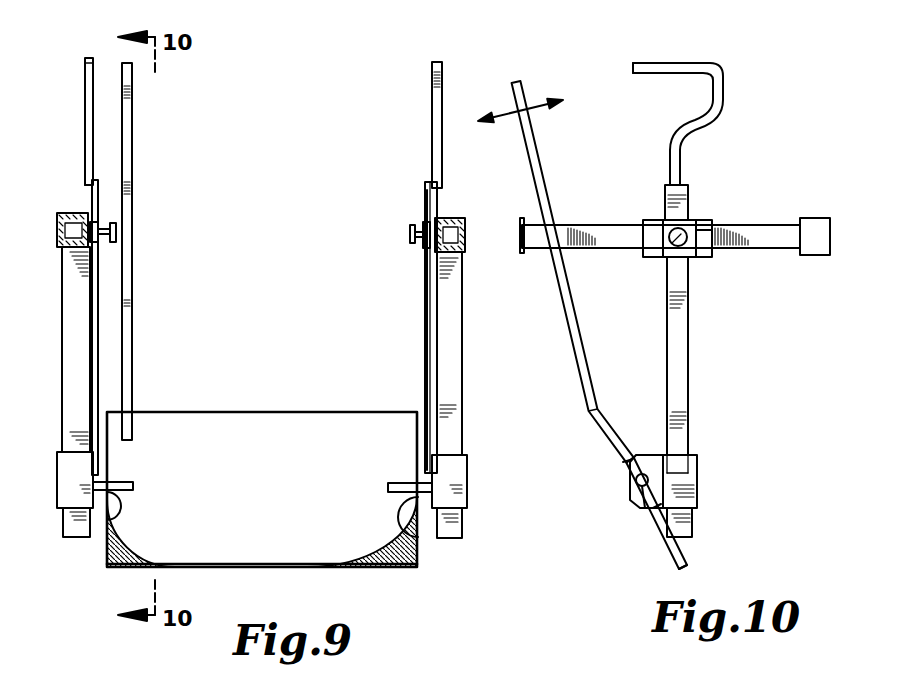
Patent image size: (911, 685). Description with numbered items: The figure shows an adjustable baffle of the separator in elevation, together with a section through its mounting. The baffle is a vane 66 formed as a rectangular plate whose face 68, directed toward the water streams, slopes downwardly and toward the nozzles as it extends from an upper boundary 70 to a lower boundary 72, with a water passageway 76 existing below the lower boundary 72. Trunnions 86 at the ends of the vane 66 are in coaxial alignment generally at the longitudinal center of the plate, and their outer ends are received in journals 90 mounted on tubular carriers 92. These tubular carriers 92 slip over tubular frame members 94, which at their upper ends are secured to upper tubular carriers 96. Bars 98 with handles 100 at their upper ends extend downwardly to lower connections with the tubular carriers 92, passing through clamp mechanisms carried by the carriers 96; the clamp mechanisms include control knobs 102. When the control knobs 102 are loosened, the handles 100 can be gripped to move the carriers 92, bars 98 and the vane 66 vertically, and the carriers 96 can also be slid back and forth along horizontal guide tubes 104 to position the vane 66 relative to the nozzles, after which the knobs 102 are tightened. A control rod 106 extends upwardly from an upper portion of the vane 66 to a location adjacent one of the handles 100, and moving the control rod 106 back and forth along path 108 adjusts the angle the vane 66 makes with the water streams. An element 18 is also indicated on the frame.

In FIG. 9, the slot 18 is at (427, 320).
In FIG. 9, the vane 66 is at (327, 565).
In FIG. 10, the vane 66 is at (623, 462).
In FIG. 10, the surface 68 is at (685, 548).
In FIG. 9, the upper boundary 70 is at (243, 412).
In FIG. 9, the lower boundary 72 is at (240, 568).
In FIG. 10, the lower boundary 72 is at (687, 565).
In FIG. 10, the water passageway 76 is at (598, 408).
In FIG. 9, the trunnions 86 is at (110, 528).
In FIG. 10, the trunnions 86 is at (647, 508).
In FIG. 10, the journals 90 is at (630, 502).
In FIG. 9, the tubular carriers 92 is at (57, 490).
In FIG. 10, the tubular carriers 92 is at (693, 497).
In FIG. 9, the tubular frame members 94 is at (72, 380).
In FIG. 9, the tubular carriers 96 is at (100, 243).
In FIG. 10, the tubular carriers 96 is at (703, 250).
In FIG. 9, the bars 98 is at (97, 350).
In FIG. 10, the bars 98 is at (682, 365).
In FIG. 9, the handles 100 is at (85, 139).
In FIG. 10, the handles 100 is at (677, 72).
In FIG. 9, the control knobs 102 is at (117, 230).
In FIG. 10, the control knobs 102 is at (662, 257).
In FIG. 9, the horizontal guide tubes 104 is at (57, 218).
In FIG. 10, the horizontal guide tubes 104 is at (750, 225).
In FIG. 9, the control rod 106 is at (132, 140).
In FIG. 10, the control rod 106 is at (535, 165).
In FIG. 10, the path 108 is at (532, 108).